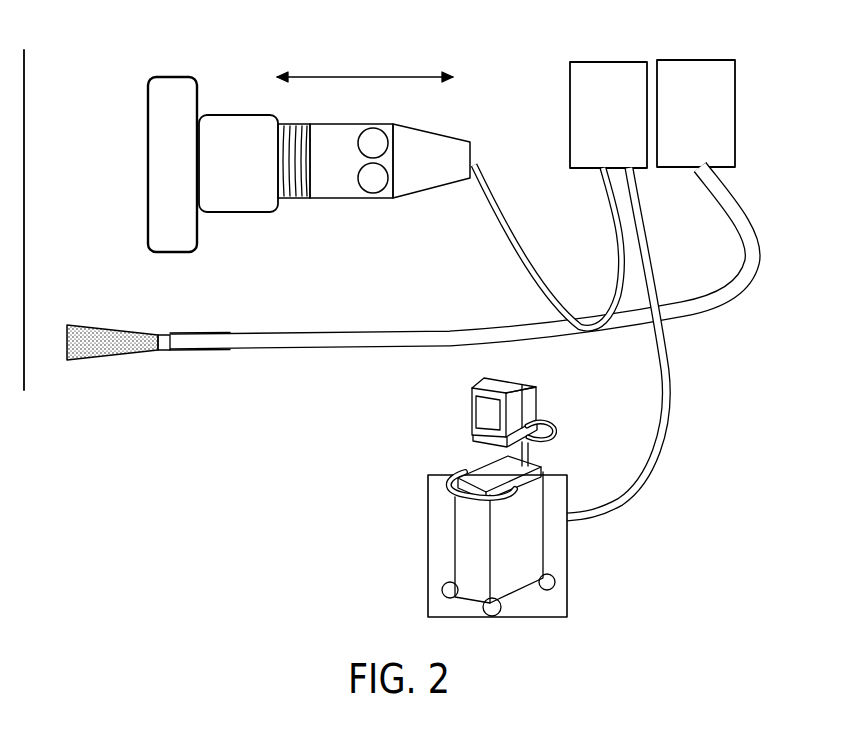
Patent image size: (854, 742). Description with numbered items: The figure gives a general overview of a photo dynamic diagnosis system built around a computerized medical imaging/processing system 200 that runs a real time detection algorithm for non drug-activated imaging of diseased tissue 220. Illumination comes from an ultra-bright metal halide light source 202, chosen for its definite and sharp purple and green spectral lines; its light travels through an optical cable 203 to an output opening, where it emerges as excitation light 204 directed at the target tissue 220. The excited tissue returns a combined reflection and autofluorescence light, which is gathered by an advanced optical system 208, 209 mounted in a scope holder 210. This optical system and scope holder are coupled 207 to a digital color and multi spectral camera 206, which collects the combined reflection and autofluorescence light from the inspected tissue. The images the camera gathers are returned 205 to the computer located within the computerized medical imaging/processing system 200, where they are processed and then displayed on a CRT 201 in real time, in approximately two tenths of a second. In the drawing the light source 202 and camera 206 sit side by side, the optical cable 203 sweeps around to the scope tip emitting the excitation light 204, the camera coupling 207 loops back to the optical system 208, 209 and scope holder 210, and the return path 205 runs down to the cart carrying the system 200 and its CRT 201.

The computerized medical imaging/processing system 200 is at (543, 527).
The CRT 201 is at (537, 407).
The ultra-bright metal halide light source 202 is at (672, 60).
The optical cable 203 is at (762, 265).
The excitation light 204 is at (98, 325).
The return of collected images 205 is at (668, 372).
The digital color & multi spectral camera 206 is at (586, 61).
The coupling 207 is at (527, 266).
The advanced optical system 208 is at (366, 123).
The advanced optical system 209 is at (222, 113).
The scope holder 210 is at (172, 75).
The target tissue 220 is at (25, 155).